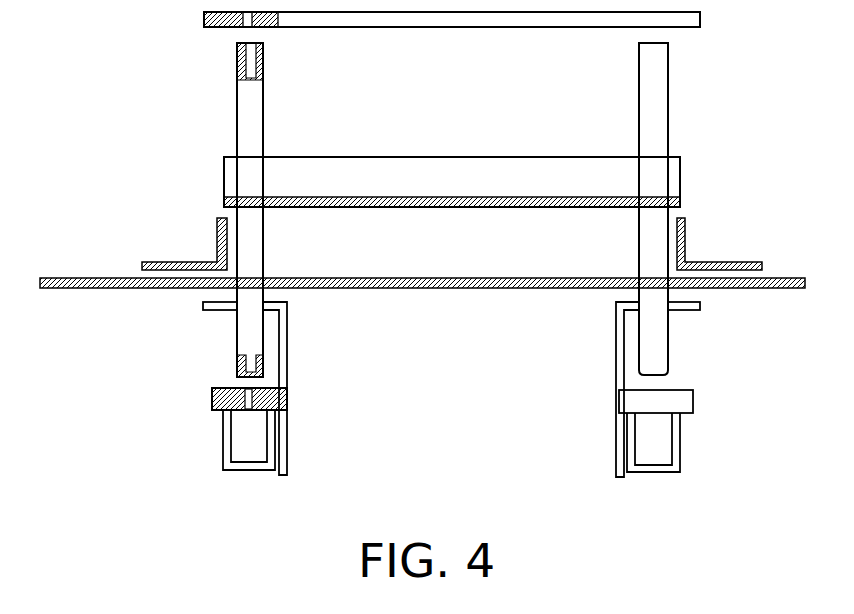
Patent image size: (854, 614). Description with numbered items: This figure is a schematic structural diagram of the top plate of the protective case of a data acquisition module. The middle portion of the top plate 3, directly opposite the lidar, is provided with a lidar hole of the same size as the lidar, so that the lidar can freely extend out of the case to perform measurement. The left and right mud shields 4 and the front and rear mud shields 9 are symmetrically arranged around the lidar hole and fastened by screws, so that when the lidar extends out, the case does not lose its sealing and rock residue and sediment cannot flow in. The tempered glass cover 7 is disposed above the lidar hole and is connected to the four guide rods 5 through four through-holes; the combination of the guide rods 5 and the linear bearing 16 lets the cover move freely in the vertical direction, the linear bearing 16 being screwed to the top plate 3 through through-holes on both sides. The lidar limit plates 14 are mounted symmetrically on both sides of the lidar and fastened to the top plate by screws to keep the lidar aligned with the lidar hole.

The top plate 3 is at (110, 282).
The left and right mud shields 4 is at (148, 265).
The guide rods 5 is at (253, 348).
The tempered glass cover 7 is at (207, 20).
The front and rear mud shields 9 is at (253, 177).
The lidar limit plates 14 is at (284, 370).
The linear bearing 16 is at (238, 450).